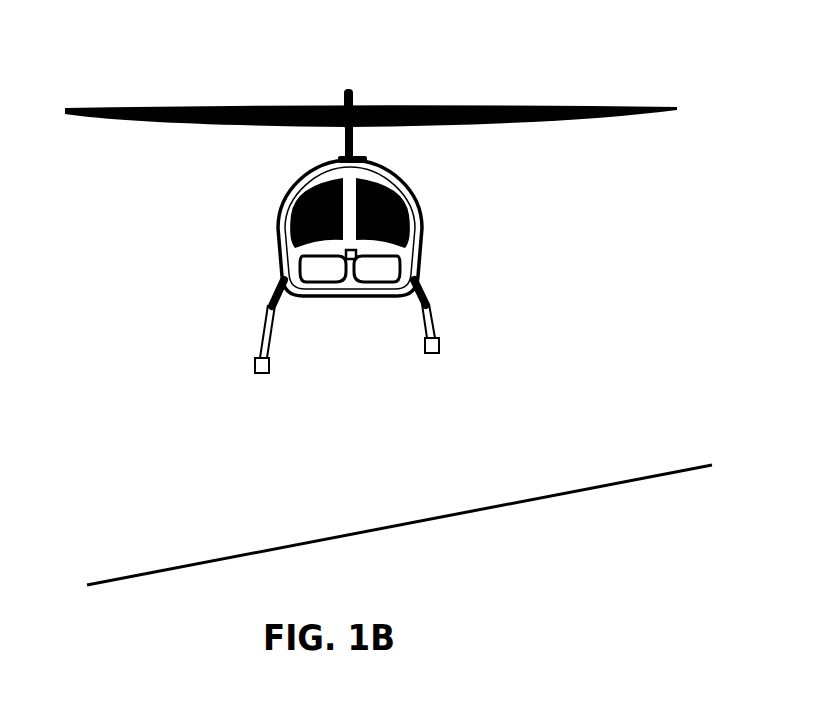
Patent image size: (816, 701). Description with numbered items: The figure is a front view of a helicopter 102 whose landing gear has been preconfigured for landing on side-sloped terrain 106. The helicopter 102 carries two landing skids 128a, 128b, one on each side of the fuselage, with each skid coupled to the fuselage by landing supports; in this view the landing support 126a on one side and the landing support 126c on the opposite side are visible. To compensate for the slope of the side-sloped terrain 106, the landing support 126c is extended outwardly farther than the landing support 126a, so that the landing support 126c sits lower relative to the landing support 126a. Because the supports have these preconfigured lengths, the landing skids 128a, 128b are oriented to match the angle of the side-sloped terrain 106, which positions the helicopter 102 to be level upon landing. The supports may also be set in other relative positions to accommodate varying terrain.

The helicopter 102 is at (147, 58).
The side-sloped terrain 106 is at (160, 538).
The landing support 126a is at (432, 321).
The landing support 126c is at (268, 322).
The landing skid 128a is at (440, 351).
The landing skid 128b is at (257, 368).